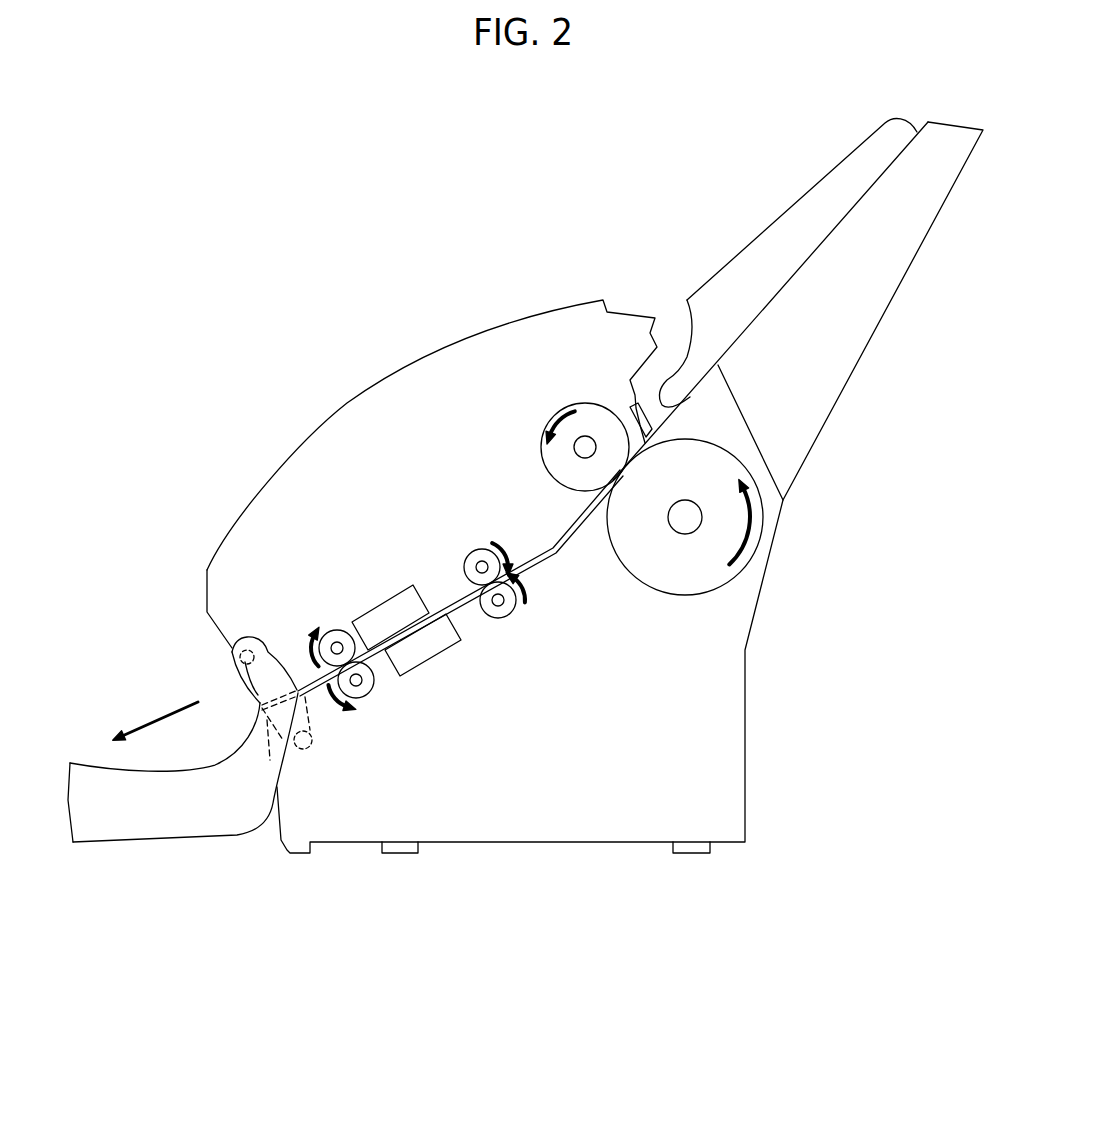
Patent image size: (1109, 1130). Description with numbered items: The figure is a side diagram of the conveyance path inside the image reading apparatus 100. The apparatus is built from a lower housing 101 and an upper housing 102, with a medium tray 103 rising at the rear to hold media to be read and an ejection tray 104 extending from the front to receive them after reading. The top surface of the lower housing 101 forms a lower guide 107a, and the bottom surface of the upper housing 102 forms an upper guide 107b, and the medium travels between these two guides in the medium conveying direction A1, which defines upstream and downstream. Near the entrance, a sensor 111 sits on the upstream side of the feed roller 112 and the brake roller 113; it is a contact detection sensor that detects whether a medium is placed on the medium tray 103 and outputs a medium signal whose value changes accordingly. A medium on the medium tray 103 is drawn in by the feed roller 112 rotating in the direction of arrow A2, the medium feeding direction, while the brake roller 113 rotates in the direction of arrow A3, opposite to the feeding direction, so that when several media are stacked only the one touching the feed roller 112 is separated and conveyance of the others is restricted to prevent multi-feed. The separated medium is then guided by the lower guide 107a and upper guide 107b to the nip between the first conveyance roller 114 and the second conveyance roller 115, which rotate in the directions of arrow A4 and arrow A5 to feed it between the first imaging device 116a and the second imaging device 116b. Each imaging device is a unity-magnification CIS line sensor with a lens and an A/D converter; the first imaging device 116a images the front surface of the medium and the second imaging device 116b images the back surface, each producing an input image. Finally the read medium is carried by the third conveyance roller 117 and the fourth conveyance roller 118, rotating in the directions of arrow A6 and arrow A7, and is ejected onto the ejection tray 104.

The image reading apparatus 100 is at (277, 317).
The lower housing 101 is at (728, 723).
The upper housing 102 is at (283, 503).
The medium tray 103 is at (875, 280).
The ejection tray 104 is at (128, 813).
The lower guide 107a is at (305, 690).
The upper guide 107b is at (297, 675).
The sensor 111 is at (630, 403).
The feed roller 112 is at (690, 560).
The brake roller 113 is at (542, 440).
The first conveyance roller 114 is at (513, 612).
The second conveyance roller 115 is at (473, 547).
The first imaging device 116a is at (423, 653).
The second imaging device 116b is at (393, 603).
The third conveyance roller 117 is at (368, 693).
The fourth conveyance roller 118 is at (333, 628).
The medium conveying direction A1 is at (155, 707).
The medium feeding direction A2 is at (733, 522).
The brake roller rotation direction A3 is at (560, 440).
The first conveyance roller rotation direction A4 is at (531, 588).
The second conveyance roller rotation direction A5 is at (507, 547).
The third conveyance roller rotation direction A6 is at (344, 712).
The fourth conveyance roller rotation direction A7 is at (311, 638).